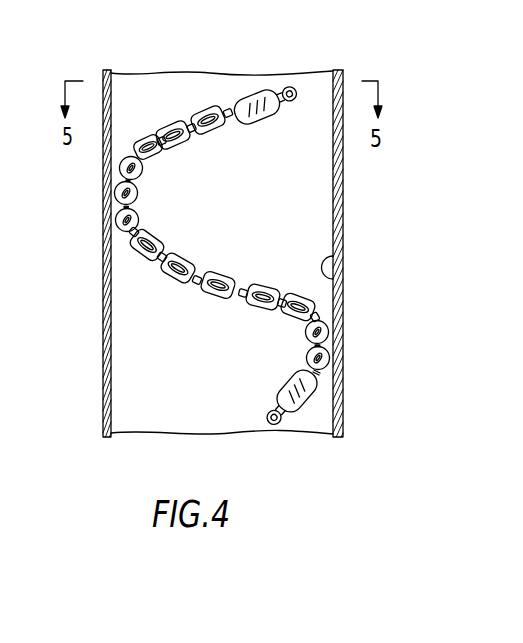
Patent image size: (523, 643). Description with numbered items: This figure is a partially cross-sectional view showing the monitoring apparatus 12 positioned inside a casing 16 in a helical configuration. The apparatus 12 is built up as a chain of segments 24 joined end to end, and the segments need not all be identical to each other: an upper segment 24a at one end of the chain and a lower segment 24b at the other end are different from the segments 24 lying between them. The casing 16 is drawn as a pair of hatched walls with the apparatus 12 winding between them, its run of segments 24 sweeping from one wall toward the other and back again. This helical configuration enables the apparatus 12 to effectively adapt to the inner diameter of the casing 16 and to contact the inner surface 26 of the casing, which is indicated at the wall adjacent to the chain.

The apparatus 12 is at (287, 237).
The casing 16 is at (343, 173).
The segments 24 is at (180, 147).
The upper segment 24a is at (249, 92).
The lower segment 24b is at (278, 388).
The inner surface 26 is at (343, 275).